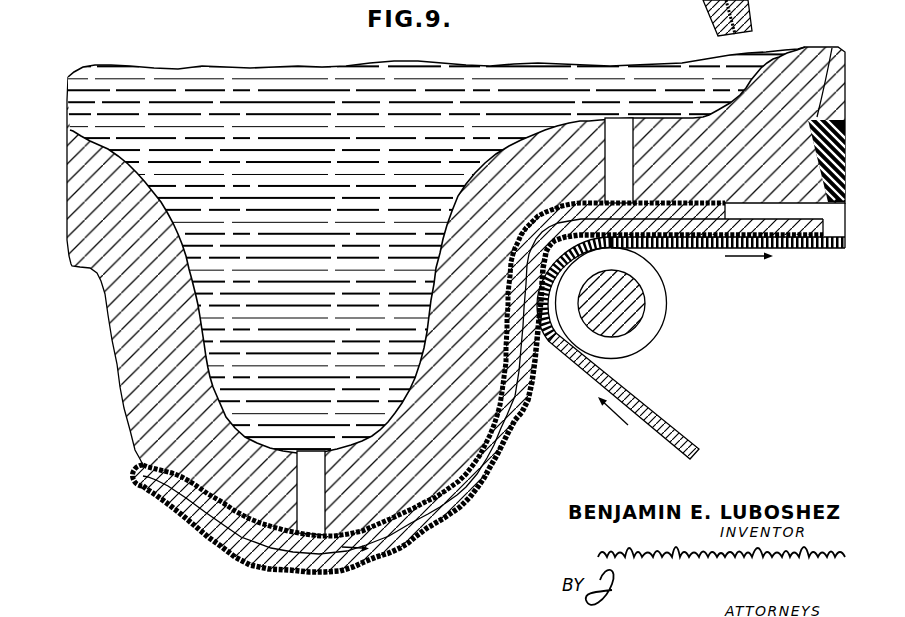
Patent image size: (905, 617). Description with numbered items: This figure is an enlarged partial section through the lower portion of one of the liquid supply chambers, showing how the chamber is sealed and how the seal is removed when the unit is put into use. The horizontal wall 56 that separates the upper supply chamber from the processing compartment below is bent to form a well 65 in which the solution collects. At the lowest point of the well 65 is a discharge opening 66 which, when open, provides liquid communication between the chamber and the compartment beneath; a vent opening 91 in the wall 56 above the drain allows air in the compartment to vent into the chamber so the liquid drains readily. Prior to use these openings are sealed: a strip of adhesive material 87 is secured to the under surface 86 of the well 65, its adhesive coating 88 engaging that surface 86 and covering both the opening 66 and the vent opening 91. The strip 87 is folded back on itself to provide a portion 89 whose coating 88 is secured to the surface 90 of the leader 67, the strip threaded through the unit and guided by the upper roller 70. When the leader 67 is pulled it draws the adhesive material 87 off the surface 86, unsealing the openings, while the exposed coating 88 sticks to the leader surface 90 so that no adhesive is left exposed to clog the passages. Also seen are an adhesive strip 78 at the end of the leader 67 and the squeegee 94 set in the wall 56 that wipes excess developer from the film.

The horizontal wall 56 is at (69, 257).
The well 65 is at (435, 254).
The discharge opening 66 is at (312, 493).
The leader 67 is at (673, 449).
The upper roller 70 is at (636, 345).
The adhesive strip 78 is at (750, 8).
The under surface 86 is at (222, 545).
The strip of adhesive material 87 is at (170, 519).
The adhesive coating 88 is at (139, 466).
The folded-back portion 89 is at (417, 543).
The leader surface 90 is at (581, 370).
The vent opening 91 is at (620, 160).
The squeegee 94 is at (833, 47).